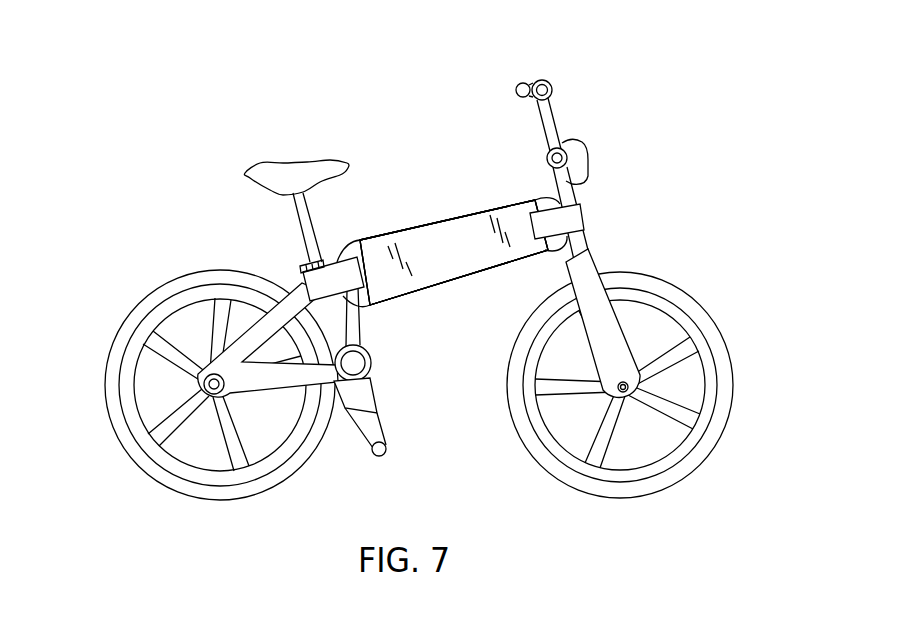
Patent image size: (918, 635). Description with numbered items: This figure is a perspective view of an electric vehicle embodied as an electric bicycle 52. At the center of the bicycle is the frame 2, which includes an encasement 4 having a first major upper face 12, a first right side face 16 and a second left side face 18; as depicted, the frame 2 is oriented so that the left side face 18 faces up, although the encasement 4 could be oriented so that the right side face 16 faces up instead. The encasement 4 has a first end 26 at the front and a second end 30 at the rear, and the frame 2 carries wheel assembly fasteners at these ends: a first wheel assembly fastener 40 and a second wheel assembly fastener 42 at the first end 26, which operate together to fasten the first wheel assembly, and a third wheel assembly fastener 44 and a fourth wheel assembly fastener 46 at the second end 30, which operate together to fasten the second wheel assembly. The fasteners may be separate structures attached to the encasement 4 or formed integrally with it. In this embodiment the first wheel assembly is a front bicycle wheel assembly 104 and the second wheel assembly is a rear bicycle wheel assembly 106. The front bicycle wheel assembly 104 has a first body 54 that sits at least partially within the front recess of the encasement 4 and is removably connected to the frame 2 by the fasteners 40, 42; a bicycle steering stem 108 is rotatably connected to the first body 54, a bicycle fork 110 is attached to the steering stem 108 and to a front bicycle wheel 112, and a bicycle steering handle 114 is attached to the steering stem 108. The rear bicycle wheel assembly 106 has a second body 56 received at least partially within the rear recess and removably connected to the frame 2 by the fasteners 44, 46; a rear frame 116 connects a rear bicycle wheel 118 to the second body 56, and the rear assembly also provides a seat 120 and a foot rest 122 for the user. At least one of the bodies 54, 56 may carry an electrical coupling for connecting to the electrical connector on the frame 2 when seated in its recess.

The frame 2 is at (453, 297).
The encasement 4 is at (477, 212).
The first major (upper) face 12 is at (438, 255).
The first (right) side face 16 is at (472, 282).
The second (left) side face 18 is at (407, 221).
The first end 26 is at (520, 230).
The second end 30 is at (377, 276).
The first wheel assembly fastener 40 is at (558, 252).
The second wheel assembly fastener 42 is at (552, 198).
The third wheel assembly fastener 44 is at (352, 293).
The fourth wheel assembly fastener 46 is at (333, 258).
The electric bicycle 52 is at (672, 142).
The first body 54 is at (570, 221).
The second body 56 is at (325, 262).
The front bicycle wheel assembly 104 is at (633, 247).
The rear bicycle wheel assembly 106 is at (242, 255).
The bicycle steering stem 108 is at (582, 193).
The bicycle fork 110 is at (607, 338).
The front bicycle wheel 112 is at (707, 413).
The bicycle steering handle 114 is at (559, 128).
The rear frame 116 is at (240, 337).
The rear bicycle wheel 118 is at (162, 358).
The seat 120 is at (295, 163).
The foot rest 122 is at (382, 456).